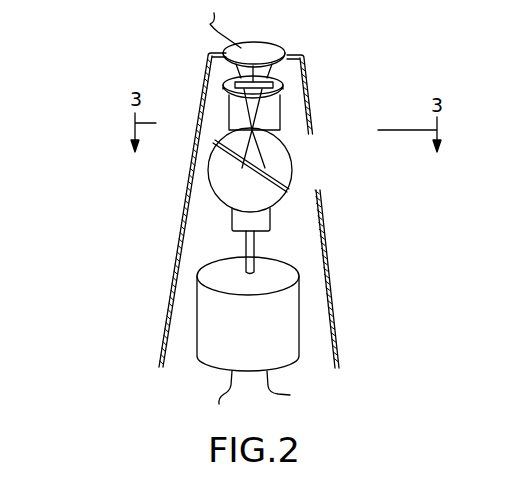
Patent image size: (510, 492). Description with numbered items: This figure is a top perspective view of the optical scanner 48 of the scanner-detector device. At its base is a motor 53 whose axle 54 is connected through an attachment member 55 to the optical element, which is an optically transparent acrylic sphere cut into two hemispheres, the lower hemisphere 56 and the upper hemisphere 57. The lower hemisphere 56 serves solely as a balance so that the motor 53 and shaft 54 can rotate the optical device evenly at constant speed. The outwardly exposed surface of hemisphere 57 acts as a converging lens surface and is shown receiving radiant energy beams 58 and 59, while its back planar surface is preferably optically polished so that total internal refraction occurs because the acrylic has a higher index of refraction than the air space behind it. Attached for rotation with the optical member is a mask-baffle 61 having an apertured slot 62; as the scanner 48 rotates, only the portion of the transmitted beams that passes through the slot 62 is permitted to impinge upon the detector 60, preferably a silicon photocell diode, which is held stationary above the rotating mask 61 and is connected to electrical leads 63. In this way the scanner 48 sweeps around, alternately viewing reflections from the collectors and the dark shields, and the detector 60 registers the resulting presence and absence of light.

The optical scanner 48 is at (161, 253).
The motor 53 is at (282, 337).
The axle 54 is at (256, 262).
The attachment member 55 is at (263, 223).
The lower hemisphere 56 is at (223, 195).
The hemisphere 57 is at (216, 152).
The radiant energy beam 58 is at (280, 108).
The radiant energy beam 59 is at (238, 72).
The detector 60 is at (263, 52).
The mask-baffle 61 is at (283, 80).
The apertured slot 62 is at (280, 108).
The electrical leads 63 is at (200, 39).